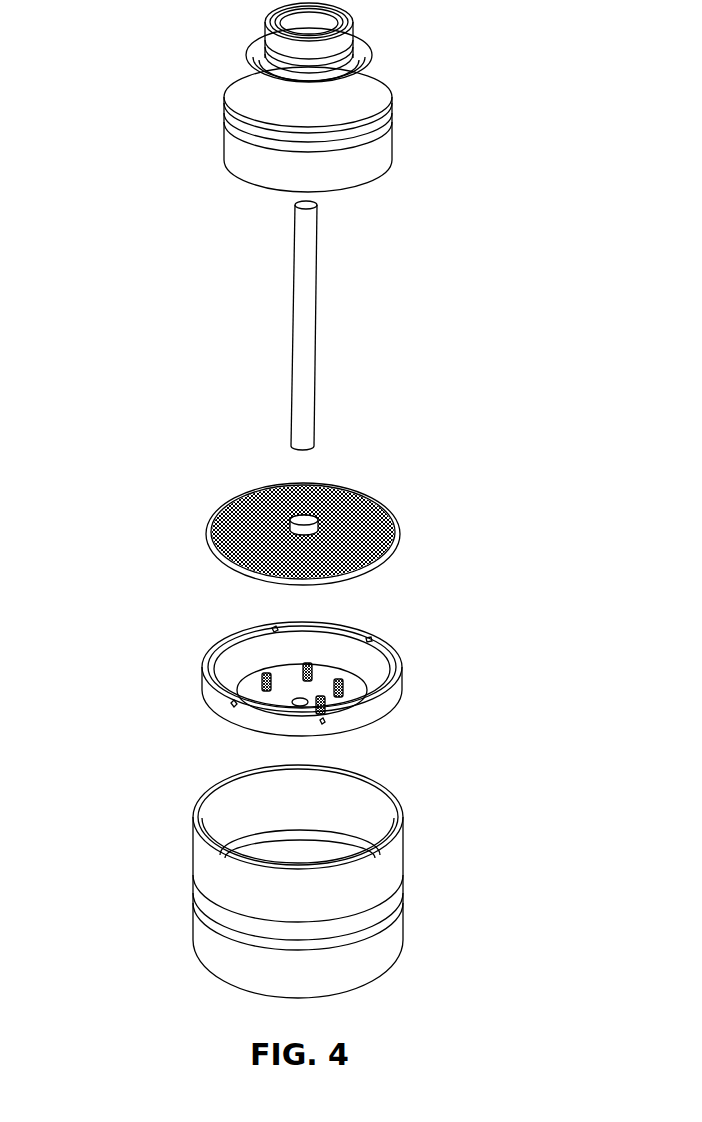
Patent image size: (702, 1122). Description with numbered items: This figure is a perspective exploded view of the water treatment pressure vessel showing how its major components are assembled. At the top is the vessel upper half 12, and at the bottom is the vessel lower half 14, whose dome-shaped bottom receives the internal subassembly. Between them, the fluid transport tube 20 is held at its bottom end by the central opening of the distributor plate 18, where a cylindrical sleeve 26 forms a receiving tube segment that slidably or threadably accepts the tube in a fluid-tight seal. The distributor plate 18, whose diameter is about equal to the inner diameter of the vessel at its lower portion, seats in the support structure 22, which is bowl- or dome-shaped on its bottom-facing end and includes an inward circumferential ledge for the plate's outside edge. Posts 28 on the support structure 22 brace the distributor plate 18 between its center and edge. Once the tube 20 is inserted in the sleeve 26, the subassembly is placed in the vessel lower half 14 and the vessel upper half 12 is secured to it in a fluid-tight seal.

The vessel upper half 12 is at (395, 105).
The fluid transport tube 20 is at (322, 331).
The distributor plate 18 is at (402, 528).
The cylindrical sleeve 26 is at (285, 523).
The support structure 22 is at (402, 683).
The posts 28 is at (300, 666).
The vessel lower half 14 is at (402, 883).